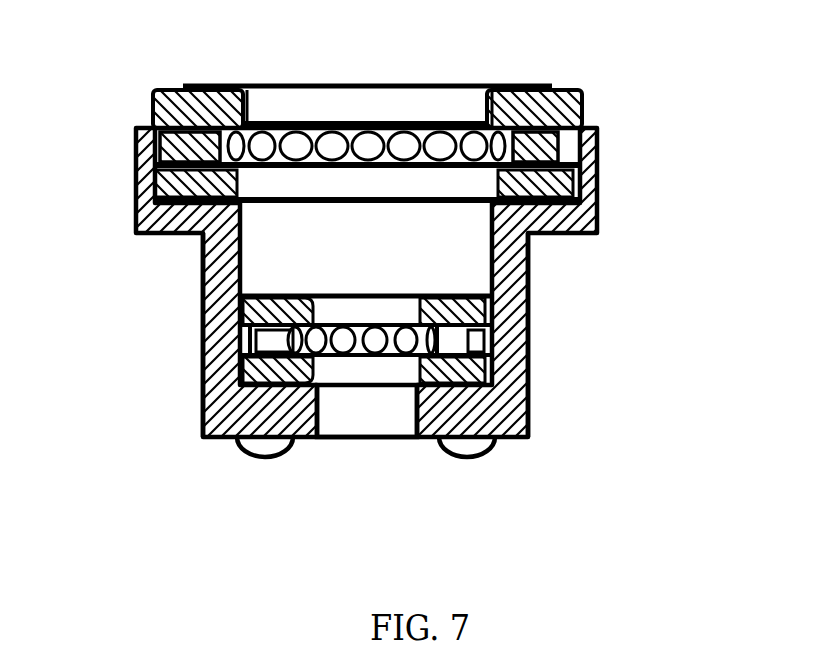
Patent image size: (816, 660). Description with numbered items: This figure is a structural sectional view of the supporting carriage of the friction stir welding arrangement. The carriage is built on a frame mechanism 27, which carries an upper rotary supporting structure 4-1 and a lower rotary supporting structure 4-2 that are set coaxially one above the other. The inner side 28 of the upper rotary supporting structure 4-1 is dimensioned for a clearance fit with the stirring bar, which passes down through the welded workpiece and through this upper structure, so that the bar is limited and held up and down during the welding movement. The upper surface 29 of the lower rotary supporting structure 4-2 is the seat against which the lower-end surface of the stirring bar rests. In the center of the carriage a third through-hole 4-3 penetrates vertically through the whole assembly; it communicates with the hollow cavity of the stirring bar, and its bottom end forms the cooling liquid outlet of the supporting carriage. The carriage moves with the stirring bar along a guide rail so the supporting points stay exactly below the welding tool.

The upper rotary supporting structure 4-1 is at (582, 102).
The lower rotary supporting structure 4-2 is at (530, 268).
The frame mechanism 27 is at (531, 318).
The inner side of the upper rotary supporting structure 28 is at (240, 183).
The upper surface of the lower rotary supporting structure 29 is at (270, 293).
The third through-hole 4-3 is at (365, 418).